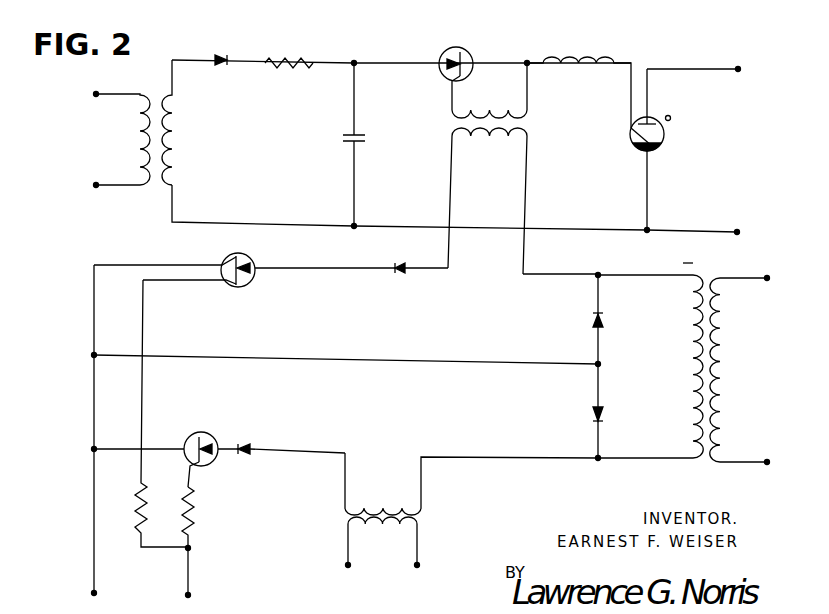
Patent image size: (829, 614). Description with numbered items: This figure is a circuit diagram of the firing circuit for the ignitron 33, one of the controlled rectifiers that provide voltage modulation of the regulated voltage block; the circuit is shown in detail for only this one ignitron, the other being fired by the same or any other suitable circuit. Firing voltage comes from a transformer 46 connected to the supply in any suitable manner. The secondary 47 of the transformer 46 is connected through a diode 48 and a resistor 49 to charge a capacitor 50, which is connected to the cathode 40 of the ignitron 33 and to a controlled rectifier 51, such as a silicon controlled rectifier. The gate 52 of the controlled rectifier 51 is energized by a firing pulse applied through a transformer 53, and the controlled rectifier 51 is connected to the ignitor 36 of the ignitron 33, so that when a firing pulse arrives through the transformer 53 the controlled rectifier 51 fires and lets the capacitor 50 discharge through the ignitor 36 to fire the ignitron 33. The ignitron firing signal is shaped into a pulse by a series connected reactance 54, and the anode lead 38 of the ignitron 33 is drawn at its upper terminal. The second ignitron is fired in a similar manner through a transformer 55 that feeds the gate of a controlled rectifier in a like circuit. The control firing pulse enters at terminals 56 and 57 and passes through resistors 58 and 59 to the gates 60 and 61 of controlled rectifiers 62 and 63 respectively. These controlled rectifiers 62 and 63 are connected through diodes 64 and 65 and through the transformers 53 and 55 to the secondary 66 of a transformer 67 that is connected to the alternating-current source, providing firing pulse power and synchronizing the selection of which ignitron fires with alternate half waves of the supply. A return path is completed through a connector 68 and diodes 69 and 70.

The ignitron 33 is at (663, 136).
The ignitor 36 is at (632, 131).
The anode lead 38 is at (654, 96).
The cathode 40 is at (652, 171).
The transformer 46 is at (157, 88).
The secondary 47 is at (177, 132).
The diode 48 is at (228, 58).
The resistor 49 is at (286, 54).
The capacitor 50 is at (341, 138).
The controlled rectifier 51 is at (437, 58).
The gate 52 is at (447, 76).
The transformer 53 is at (562, 135).
The reactance 54 is at (585, 56).
The transformer 55 is at (456, 533).
The terminal 56 is at (101, 586).
The terminal 57 is at (192, 597).
The resistor 58 is at (197, 509).
The resistor 59 is at (128, 515).
The gate 60 is at (190, 455).
The gate 61 is at (234, 285).
The controlled rectifier 62 is at (206, 433).
The controlled rectifier 63 is at (250, 248).
The diode 64 is at (244, 445).
The diode 65 is at (394, 252).
The secondary 66 is at (688, 375).
The transformer 67 is at (717, 493).
The connector 68 is at (284, 353).
The diode 69 is at (611, 409).
The diode 70 is at (609, 325).